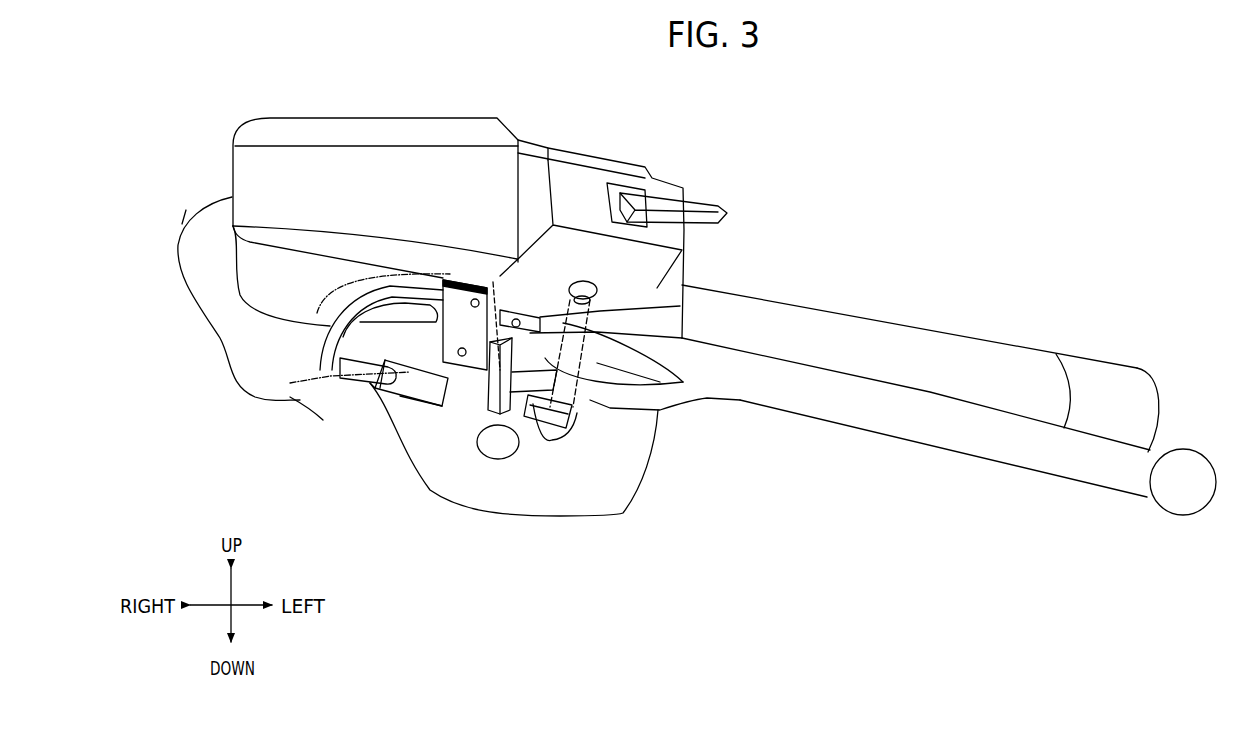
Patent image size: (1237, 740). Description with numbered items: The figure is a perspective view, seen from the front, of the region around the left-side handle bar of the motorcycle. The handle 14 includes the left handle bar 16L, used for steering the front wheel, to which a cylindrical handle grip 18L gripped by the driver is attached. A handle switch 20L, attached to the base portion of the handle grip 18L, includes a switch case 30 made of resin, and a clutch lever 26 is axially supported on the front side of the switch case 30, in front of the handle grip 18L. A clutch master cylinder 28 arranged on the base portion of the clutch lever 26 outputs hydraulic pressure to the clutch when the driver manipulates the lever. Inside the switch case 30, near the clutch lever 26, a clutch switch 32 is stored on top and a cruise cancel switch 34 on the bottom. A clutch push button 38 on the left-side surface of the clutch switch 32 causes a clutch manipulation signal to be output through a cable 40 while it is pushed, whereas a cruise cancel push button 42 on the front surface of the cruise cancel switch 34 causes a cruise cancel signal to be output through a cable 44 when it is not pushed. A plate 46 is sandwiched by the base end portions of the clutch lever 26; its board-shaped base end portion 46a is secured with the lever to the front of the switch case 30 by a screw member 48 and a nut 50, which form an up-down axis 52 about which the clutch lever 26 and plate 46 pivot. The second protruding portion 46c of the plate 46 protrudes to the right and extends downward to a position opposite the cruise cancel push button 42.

The clutch master cylinder 28 is at (353, 121).
The handle switch 20L is at (535, 128).
The switch case 30 is at (616, 162).
The screw member 48 is at (591, 288).
The clutch switch 32 is at (456, 284).
The clutch push button 38 is at (522, 332).
The cable 40 is at (330, 358).
The cruise cancel switch 34 is at (415, 387).
The cable 44 is at (348, 366).
The cruise cancel push button 42 is at (468, 400).
The plate 46 is at (530, 420).
The second protruding portion 46c is at (503, 420).
The nut 50 is at (566, 428).
The axis 52 is at (605, 396).
The base end portion 46a is at (620, 343).
The handle grip 18L is at (848, 323).
The handle bar 16L is at (1096, 362).
The handle 14 is at (1148, 410).
The clutch lever 26 is at (891, 425).